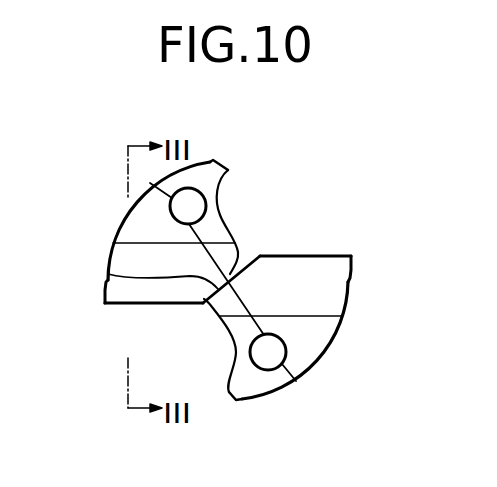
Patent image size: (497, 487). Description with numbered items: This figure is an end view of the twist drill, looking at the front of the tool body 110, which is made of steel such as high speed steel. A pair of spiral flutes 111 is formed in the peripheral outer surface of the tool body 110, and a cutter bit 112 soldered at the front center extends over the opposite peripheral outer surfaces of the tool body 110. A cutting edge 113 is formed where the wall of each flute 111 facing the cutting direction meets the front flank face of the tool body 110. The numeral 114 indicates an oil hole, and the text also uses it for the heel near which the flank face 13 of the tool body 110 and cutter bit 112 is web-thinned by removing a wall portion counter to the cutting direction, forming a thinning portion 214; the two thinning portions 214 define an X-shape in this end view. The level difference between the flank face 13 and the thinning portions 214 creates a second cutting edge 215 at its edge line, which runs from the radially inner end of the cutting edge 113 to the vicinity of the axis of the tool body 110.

The flank face 13 is at (138, 227).
The tool body 110 is at (339, 343).
The spiral flute 111 is at (260, 195).
The cutter bit 112 is at (354, 266).
The cutting edge 113 is at (134, 307).
The oil hole 114 is at (230, 170).
The thinning portion 214 is at (215, 306).
The second cutting edge 215 is at (108, 274).